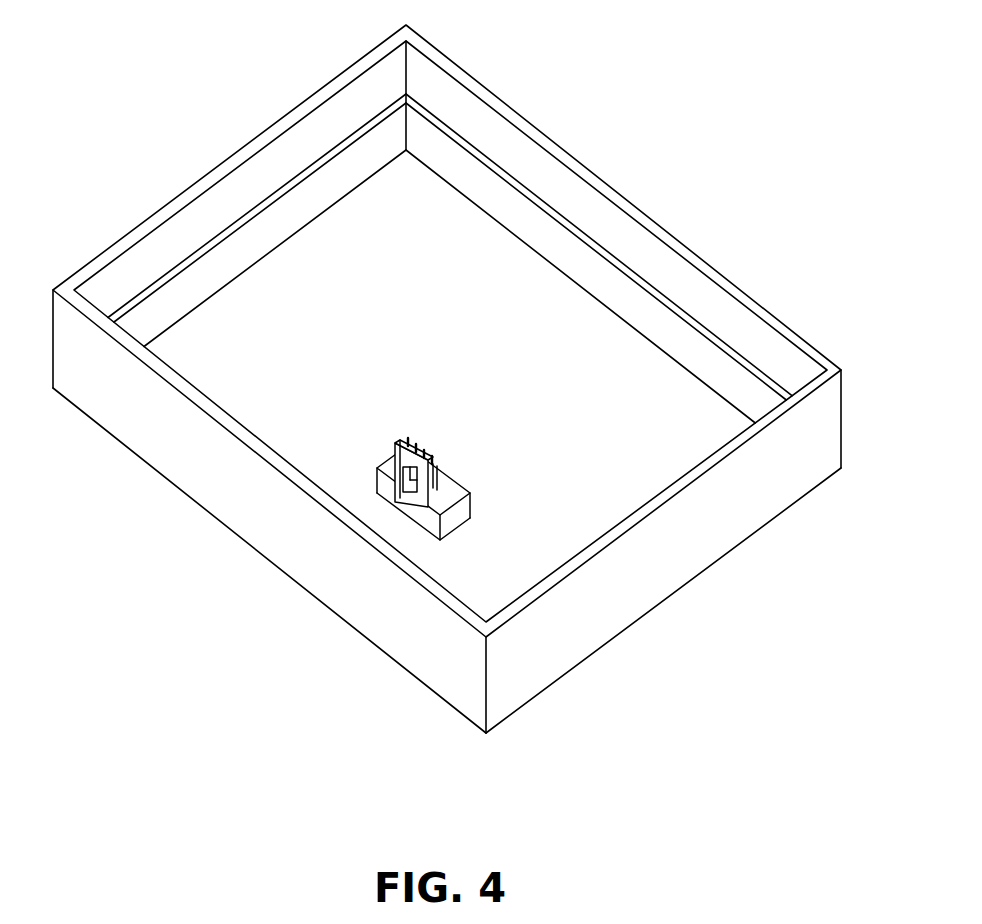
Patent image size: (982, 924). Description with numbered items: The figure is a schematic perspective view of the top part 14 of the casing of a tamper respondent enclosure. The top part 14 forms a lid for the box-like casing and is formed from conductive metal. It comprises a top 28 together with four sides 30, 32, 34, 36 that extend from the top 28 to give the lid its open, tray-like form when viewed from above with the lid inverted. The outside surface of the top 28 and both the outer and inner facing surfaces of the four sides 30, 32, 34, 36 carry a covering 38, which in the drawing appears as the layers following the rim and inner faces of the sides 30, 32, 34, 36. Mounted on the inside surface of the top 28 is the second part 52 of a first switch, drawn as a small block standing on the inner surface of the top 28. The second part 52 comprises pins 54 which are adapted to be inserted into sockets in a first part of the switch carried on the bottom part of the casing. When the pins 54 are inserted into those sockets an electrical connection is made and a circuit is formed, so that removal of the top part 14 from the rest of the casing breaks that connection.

The top part 14 is at (163, 124).
The top 28 is at (684, 418).
The side 30 is at (804, 496).
The side 32 is at (461, 113).
The side 34 is at (305, 140).
The side 36 is at (108, 410).
The covering 38 is at (657, 273).
The second part 52 is at (390, 501).
The pins 54 is at (435, 457).